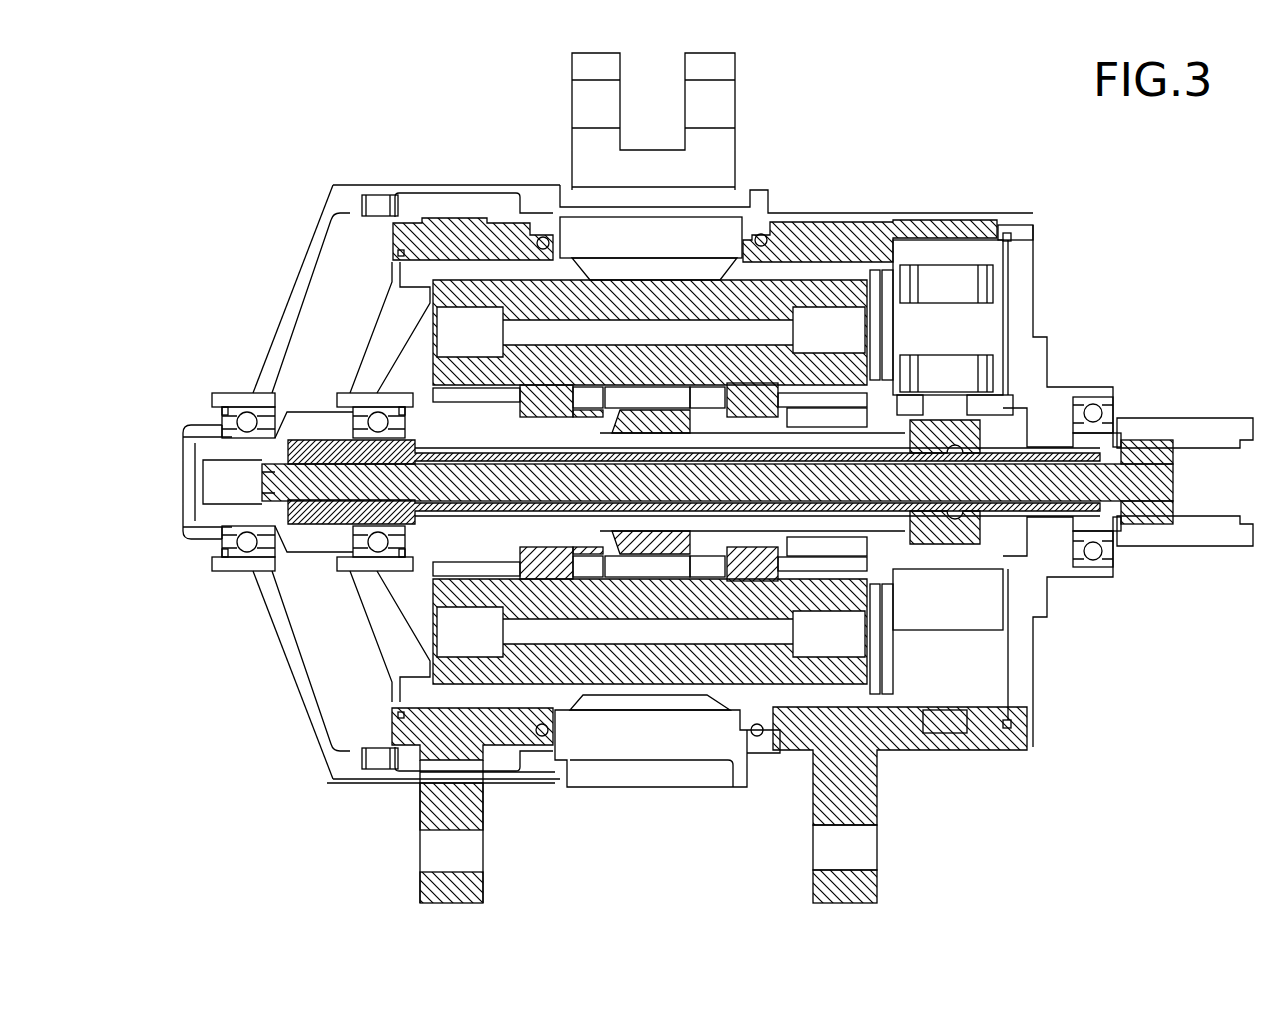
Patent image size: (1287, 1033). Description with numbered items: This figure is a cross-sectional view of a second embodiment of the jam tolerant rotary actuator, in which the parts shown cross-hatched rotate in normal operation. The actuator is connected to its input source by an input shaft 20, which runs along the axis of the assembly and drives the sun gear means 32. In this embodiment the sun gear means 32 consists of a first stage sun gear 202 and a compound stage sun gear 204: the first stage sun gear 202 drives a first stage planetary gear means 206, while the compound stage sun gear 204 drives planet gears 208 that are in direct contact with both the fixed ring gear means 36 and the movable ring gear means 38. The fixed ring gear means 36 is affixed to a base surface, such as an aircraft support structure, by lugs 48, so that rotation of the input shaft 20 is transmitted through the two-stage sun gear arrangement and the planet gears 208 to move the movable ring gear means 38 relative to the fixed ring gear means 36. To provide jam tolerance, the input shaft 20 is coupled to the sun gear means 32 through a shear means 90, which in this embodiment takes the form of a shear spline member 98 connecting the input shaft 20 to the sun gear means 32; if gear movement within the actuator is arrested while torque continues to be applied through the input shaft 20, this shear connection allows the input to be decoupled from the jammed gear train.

The input shaft 20 is at (1178, 456).
The sun gear means 32 is at (985, 430).
The fixed ring gear means 36 is at (905, 222).
The movable ring gear means 38 is at (772, 213).
The lugs 48 is at (872, 892).
The shear means 90 is at (1130, 440).
The shear spline member 98 is at (1138, 446).
The first stage sun gear 202 is at (985, 448).
The compound stage sun gear 204 is at (645, 432).
The first stage planetary gear means 206 is at (968, 378).
The planet gears 208 is at (768, 292).